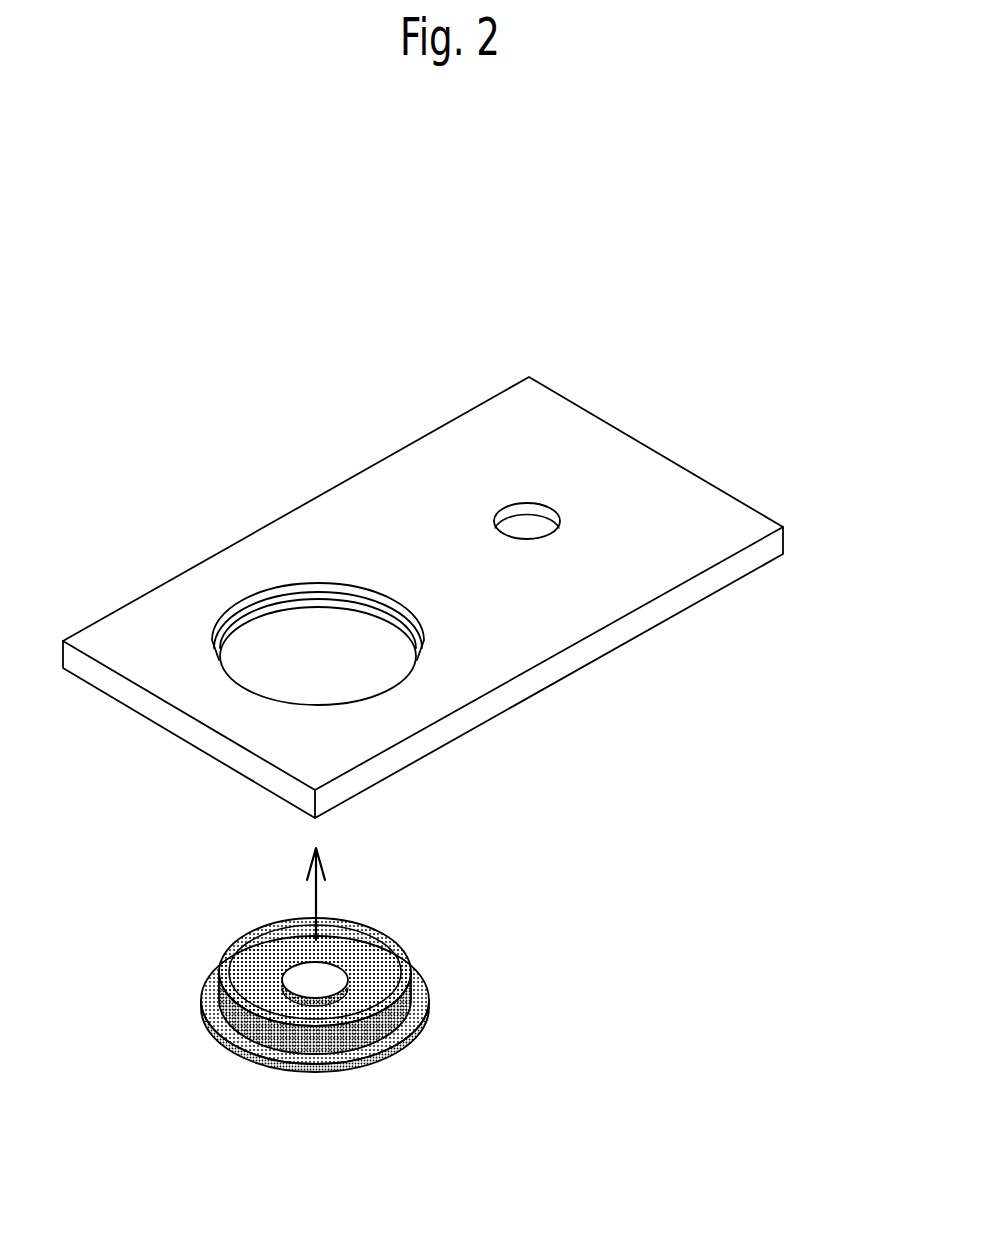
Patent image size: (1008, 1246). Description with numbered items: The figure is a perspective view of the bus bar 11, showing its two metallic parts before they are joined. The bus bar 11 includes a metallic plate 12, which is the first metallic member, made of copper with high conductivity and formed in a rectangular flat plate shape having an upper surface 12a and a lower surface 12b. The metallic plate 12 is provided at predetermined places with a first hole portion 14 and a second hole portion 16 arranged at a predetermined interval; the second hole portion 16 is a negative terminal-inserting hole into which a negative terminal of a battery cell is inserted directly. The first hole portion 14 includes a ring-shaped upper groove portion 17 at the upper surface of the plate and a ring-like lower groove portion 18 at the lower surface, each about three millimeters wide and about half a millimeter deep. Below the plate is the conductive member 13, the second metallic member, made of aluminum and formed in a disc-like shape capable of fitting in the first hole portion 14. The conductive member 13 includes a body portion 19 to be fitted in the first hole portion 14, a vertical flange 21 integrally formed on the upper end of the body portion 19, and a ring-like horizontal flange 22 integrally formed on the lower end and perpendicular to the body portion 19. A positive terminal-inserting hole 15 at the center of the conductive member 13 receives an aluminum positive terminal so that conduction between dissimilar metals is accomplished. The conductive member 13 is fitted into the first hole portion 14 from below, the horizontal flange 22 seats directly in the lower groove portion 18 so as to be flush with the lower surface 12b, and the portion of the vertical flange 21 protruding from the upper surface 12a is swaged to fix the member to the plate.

The bus bar 11 is at (473, 540).
The metallic plate 12 is at (473, 597).
The upper surface of the metallic plate 12a is at (145, 625).
The lower surface of the metallic plate 12b is at (140, 714).
The conductive member 13 is at (322, 966).
The first hole portion 14 is at (312, 635).
The positive terminal-inserting hole 15 is at (310, 995).
The second hole portion 16 is at (522, 532).
The upper groove portion 17 is at (316, 588).
The lower groove portion 18 is at (367, 618).
The body portion 19 is at (396, 1030).
The vertical flange 21 is at (230, 948).
The horizontal flange 22 is at (210, 1028).